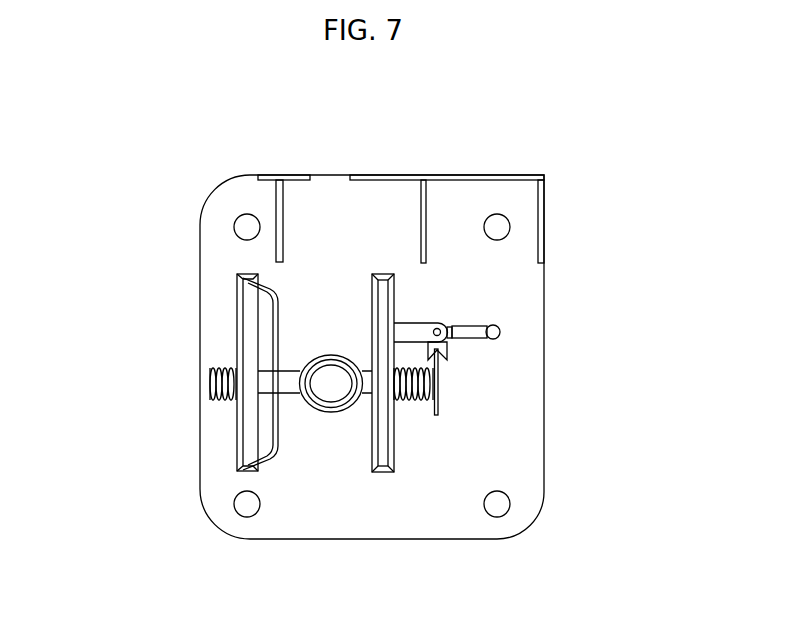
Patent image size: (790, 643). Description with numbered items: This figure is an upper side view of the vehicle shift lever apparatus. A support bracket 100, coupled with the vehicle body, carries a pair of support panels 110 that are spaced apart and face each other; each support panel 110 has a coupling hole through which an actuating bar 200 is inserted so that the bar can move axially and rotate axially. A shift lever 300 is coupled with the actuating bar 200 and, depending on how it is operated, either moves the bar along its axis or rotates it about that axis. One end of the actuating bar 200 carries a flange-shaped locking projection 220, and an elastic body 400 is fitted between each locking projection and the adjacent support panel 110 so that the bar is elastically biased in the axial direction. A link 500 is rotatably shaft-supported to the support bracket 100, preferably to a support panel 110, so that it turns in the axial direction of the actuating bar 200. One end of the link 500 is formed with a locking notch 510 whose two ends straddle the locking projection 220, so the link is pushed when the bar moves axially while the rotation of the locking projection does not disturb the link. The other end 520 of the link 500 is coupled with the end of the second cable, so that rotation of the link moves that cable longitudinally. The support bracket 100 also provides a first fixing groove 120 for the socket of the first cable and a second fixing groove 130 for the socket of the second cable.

The support bracket 100 is at (422, 528).
The support panel 110 is at (373, 285).
The first fixing groove 120 is at (330, 178).
The second fixing groove 130 is at (470, 178).
The actuating bar 200 is at (288, 388).
The locking projection 220 is at (440, 407).
The shift lever 300 is at (328, 393).
The elastic body 400 is at (213, 386).
The link 500 is at (471, 331).
The locking notch 510 is at (445, 364).
The other end of the link 520 is at (499, 326).